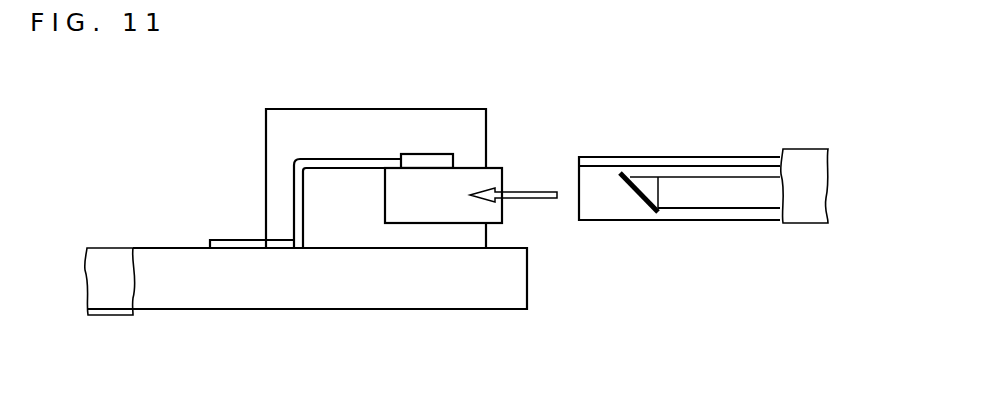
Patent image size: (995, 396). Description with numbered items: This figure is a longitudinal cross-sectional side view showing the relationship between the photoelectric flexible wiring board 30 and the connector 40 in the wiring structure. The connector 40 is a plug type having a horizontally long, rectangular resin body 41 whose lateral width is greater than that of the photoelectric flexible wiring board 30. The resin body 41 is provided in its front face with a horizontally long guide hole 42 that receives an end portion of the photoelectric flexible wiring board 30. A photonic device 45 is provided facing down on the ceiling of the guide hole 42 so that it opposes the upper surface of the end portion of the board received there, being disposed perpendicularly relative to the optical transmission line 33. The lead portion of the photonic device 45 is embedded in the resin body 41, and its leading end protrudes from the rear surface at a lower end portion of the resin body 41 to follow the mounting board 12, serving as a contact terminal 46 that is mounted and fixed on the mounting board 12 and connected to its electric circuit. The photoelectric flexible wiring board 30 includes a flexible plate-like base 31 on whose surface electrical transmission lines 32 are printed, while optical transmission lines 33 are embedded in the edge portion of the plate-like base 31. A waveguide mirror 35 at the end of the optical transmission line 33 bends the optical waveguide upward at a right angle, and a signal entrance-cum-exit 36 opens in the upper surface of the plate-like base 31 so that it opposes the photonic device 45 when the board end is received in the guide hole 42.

The mounting board 12 is at (467, 310).
The connector 40 is at (356, 108).
The resin body 41 is at (489, 118).
The guide hole 42 is at (435, 186).
The photonic device 45 is at (430, 153).
The contact terminal 46 is at (223, 239).
The photoelectric flexible wiring board 30 is at (743, 221).
The plate-like base 31 is at (695, 221).
The electrical transmission lines 32 is at (692, 160).
The optical transmission lines 33 is at (757, 190).
The waveguide mirror 35 is at (637, 195).
The signal entrance-cum-exit 36 is at (636, 170).